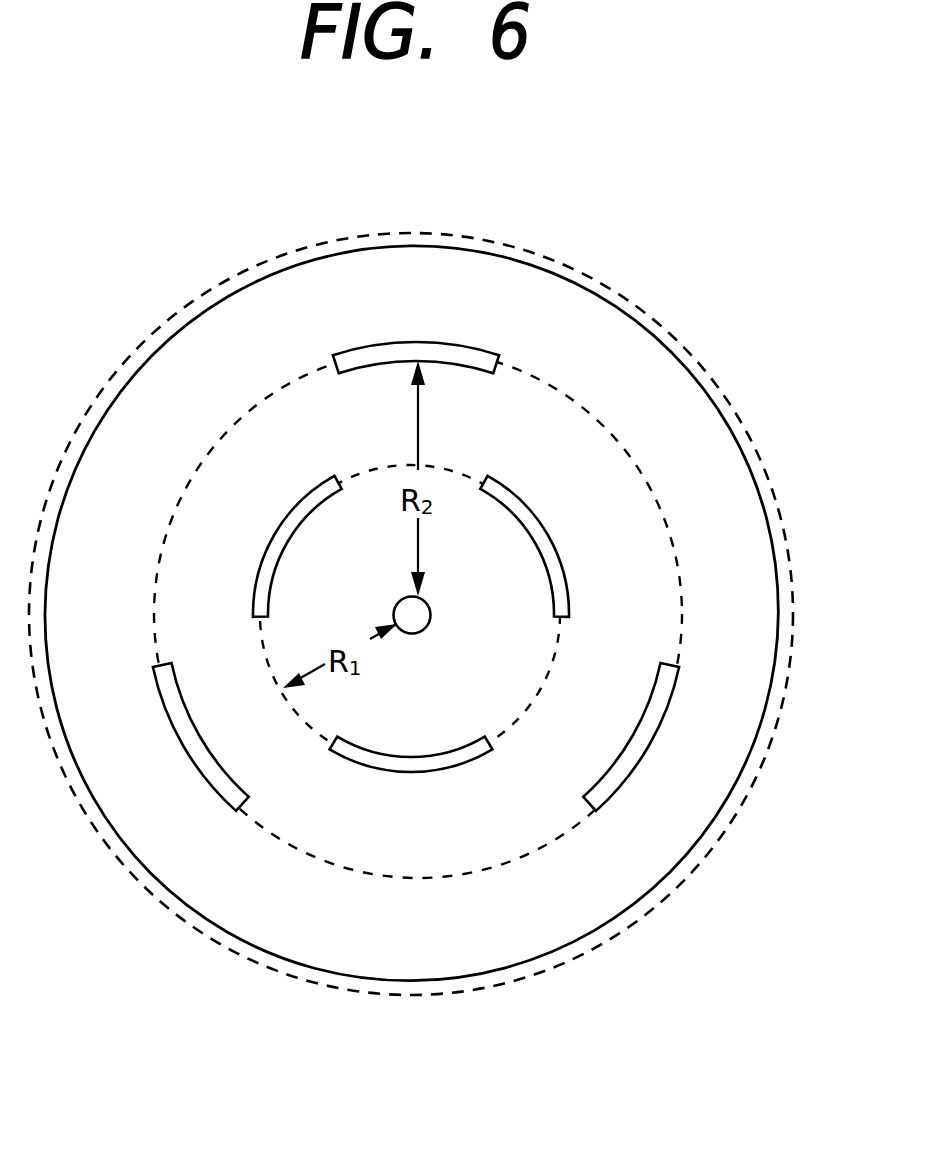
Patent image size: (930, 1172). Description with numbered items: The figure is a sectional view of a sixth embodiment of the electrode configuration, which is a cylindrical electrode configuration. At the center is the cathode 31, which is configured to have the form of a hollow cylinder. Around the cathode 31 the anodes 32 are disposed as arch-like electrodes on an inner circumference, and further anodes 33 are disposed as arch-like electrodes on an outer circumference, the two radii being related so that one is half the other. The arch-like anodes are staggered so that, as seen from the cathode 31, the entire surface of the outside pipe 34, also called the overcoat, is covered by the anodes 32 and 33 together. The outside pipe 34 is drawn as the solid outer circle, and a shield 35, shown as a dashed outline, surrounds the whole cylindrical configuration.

The cathode 31 is at (431, 611).
The anodes 32 is at (547, 522).
The anodes 33 is at (470, 353).
The outside pipe (overcoat) 34 is at (652, 337).
The shield 35 is at (707, 370).